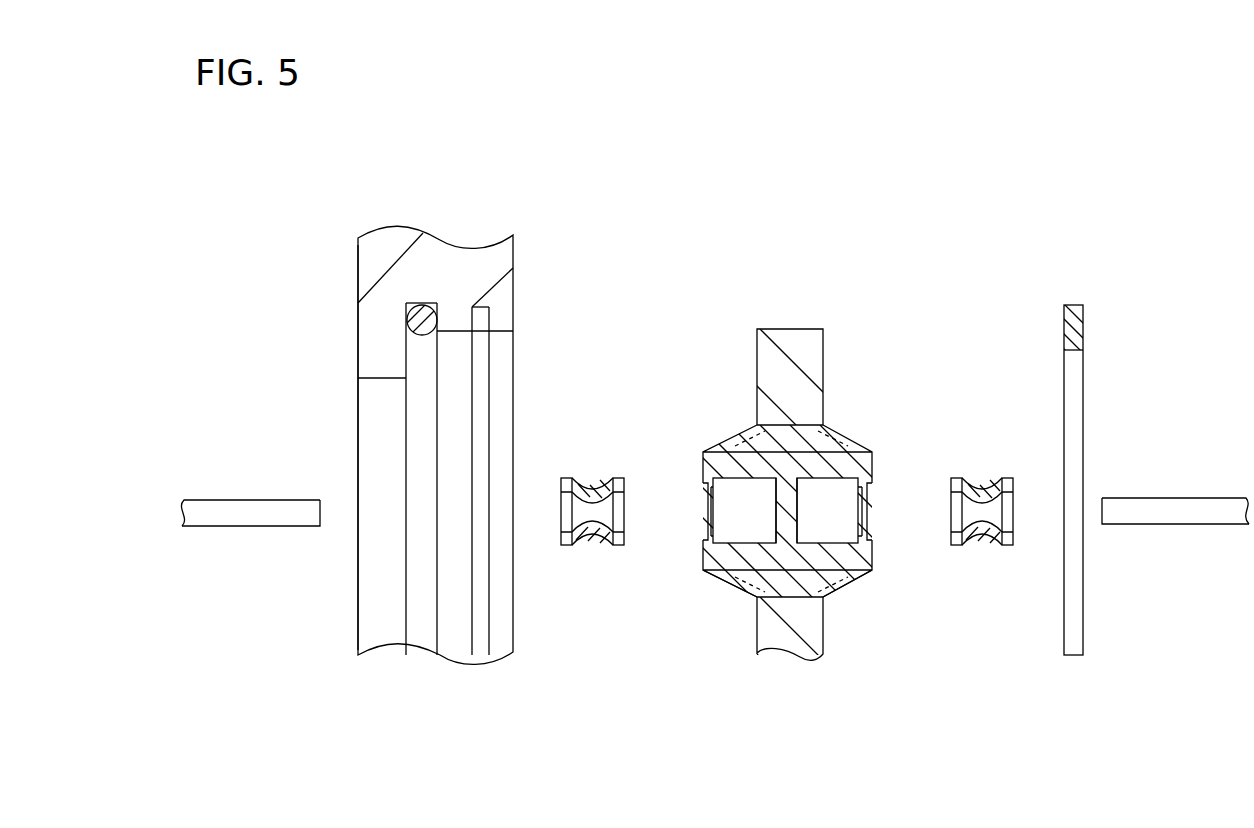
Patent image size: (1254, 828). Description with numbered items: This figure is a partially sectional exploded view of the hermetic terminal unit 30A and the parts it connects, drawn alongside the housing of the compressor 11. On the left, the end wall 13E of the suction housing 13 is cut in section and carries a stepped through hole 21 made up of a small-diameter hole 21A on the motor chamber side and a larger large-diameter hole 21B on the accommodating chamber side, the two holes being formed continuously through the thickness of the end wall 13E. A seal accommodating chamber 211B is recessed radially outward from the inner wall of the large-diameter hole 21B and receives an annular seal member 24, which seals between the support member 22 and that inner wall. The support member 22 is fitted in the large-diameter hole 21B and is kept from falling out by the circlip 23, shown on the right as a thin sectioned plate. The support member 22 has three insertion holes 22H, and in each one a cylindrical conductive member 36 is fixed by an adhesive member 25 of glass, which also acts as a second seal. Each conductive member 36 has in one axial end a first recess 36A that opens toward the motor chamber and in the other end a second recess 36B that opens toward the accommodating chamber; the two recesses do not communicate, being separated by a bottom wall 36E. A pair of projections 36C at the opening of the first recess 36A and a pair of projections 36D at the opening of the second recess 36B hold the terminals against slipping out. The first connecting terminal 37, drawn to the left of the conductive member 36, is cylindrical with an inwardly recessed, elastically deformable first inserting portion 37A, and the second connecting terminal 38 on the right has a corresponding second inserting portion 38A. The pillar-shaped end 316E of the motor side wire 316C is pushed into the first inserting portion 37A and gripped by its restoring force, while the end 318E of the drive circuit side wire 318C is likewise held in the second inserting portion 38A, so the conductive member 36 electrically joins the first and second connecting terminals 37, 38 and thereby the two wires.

The conveying device 11 is at (457, 405).
The suction housing 13 is at (434, 405).
The end wall 13E is at (358, 268).
The through hole 21 is at (428, 400).
The small-diameter hole 21A is at (384, 384).
The large-diameter hole 21B is at (468, 338).
The seal accommodating chamber 211B is at (420, 318).
The seal member 24 is at (437, 352).
The motor side wire 316C is at (251, 515).
The end of motor side wire 316E is at (303, 527).
The drive circuit side wire 318C is at (1174, 514).
The end of drive circuit side wire 318E is at (1128, 525).
The circlip 23 is at (1084, 325).
The hermetic terminal unit 30A is at (805, 512).
The first connecting terminal 37 is at (580, 489).
The first inserting portion 37A is at (588, 493).
The second connecting terminal 38 is at (989, 489).
The second inserting portion 38A is at (980, 488).
The conductive member 36 is at (805, 583).
The first recess 36A is at (742, 534).
The second recess 36B is at (840, 545).
The projections 36C is at (709, 520).
The projections 36D is at (864, 520).
The bottom wall 36E is at (786, 525).
The adhesive member 25 is at (748, 580).
The support member 22 is at (765, 528).
The insertion hole 22H is at (830, 590).